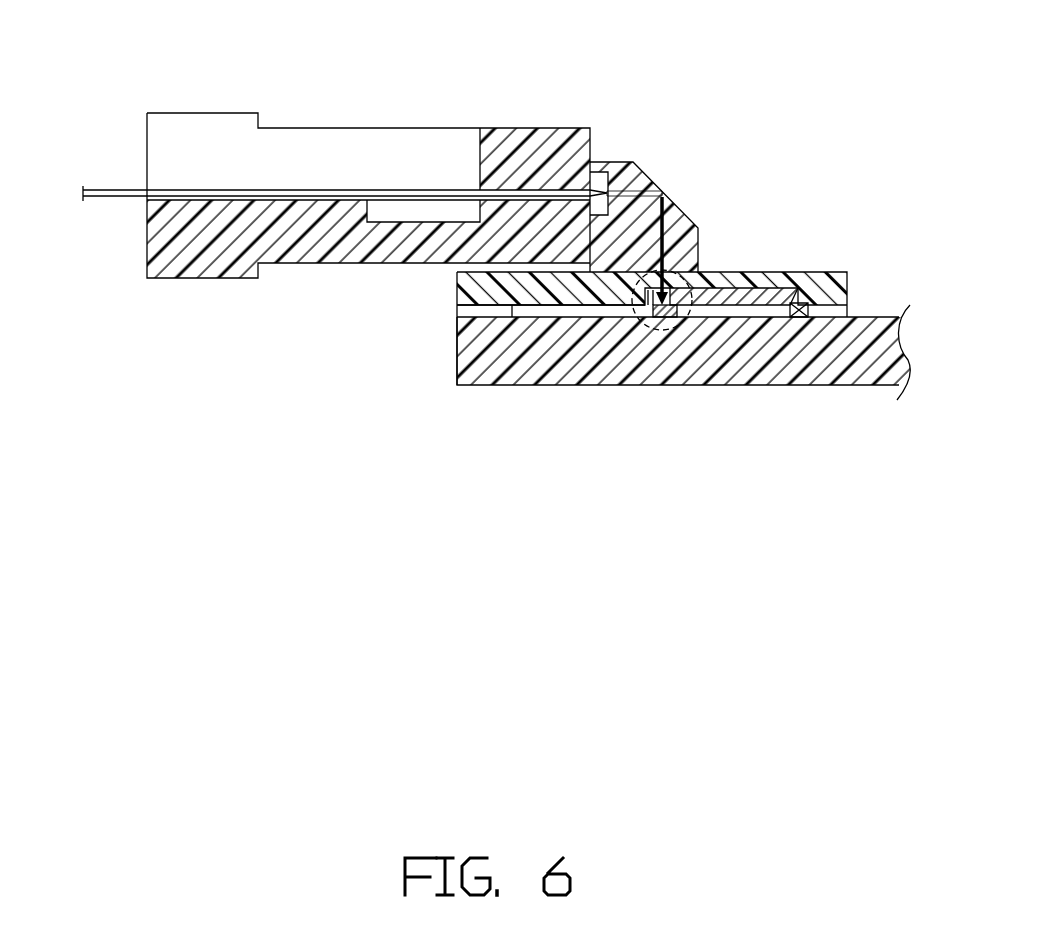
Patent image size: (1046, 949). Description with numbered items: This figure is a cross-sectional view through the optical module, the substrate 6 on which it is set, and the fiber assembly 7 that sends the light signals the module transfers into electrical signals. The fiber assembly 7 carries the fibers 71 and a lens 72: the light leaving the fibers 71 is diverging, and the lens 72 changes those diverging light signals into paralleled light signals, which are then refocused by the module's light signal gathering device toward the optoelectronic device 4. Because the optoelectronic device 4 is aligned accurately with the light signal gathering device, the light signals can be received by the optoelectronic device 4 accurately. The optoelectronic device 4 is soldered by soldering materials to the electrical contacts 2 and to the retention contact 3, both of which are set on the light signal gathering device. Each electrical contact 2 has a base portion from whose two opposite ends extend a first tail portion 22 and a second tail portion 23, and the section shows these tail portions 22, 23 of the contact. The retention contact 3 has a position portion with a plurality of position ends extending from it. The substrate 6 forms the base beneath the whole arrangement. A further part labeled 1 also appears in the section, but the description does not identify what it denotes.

The substrate 1 is at (820, 280).
The electrical contact 2 is at (737, 297).
The retention contact 3 is at (642, 305).
The optoelectronic device 4 is at (654, 320).
The substrate 6 is at (752, 362).
The fiber assembly 7 is at (532, 147).
The first tail portion 22 is at (673, 310).
The second tail portion 23 is at (796, 318).
The fibers 71 is at (122, 193).
The lens 72 is at (627, 161).